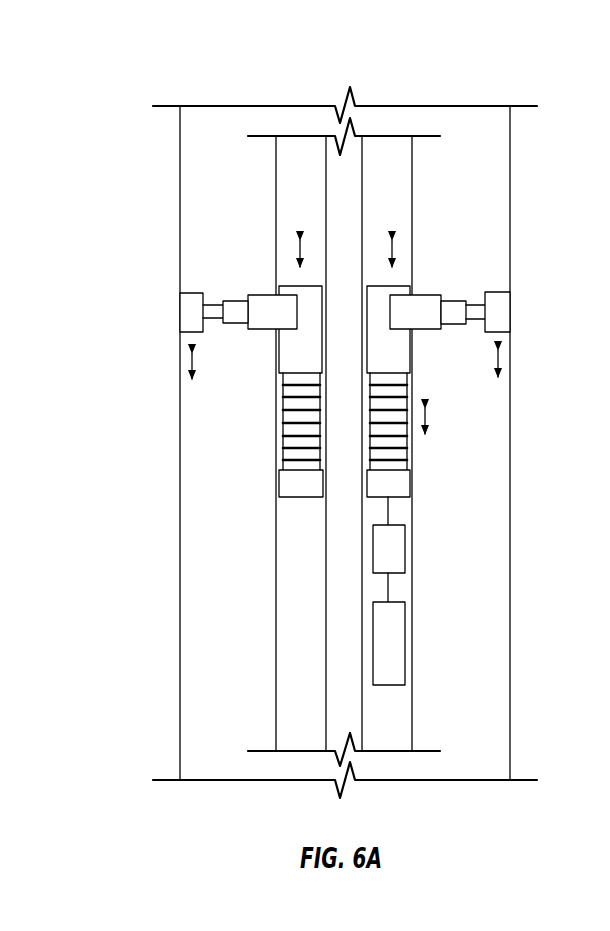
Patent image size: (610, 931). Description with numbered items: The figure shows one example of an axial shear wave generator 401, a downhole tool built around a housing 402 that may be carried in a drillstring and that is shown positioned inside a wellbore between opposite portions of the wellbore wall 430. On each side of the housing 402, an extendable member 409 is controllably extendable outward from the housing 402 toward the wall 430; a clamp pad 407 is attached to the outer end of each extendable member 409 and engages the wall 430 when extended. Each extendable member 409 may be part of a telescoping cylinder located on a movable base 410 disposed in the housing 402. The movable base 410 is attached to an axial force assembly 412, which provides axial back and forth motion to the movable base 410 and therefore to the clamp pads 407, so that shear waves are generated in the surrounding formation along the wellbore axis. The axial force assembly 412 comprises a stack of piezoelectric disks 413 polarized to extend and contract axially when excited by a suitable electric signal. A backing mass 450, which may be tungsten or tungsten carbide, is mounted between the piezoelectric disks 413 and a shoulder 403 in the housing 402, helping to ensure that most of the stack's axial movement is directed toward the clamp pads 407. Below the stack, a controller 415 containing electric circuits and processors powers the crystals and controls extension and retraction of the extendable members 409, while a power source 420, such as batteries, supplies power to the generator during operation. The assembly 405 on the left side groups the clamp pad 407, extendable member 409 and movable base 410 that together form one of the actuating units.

The axial shear wave generator 401 is at (175, 75).
The housing 402 is at (415, 697).
The shoulder 403 is at (300, 497).
The actuation mechanism 405 is at (203, 280).
The clamp pad 407 is at (190, 312).
The extendable member 409 is at (236, 300).
The movable base 410 is at (302, 348).
The axial force assembly 412 is at (265, 375).
The piezoelectric disks 413 is at (407, 440).
The controller 415 is at (405, 548).
The power source 420 is at (405, 642).
The wall 430 is at (505, 412).
The backing mass 450 is at (410, 482).